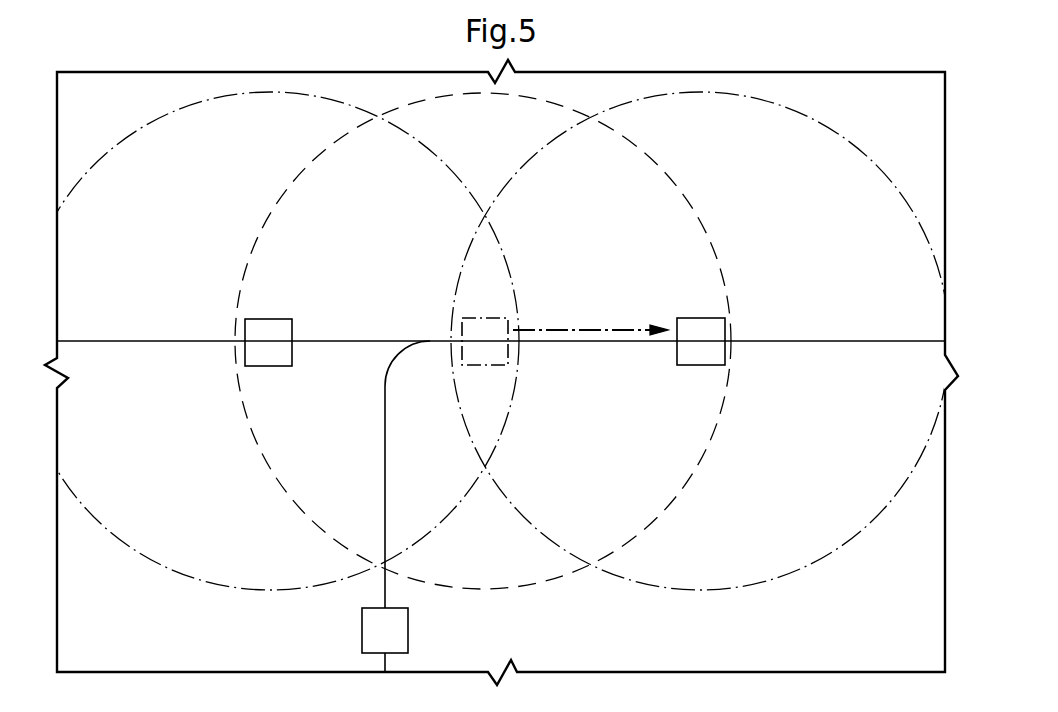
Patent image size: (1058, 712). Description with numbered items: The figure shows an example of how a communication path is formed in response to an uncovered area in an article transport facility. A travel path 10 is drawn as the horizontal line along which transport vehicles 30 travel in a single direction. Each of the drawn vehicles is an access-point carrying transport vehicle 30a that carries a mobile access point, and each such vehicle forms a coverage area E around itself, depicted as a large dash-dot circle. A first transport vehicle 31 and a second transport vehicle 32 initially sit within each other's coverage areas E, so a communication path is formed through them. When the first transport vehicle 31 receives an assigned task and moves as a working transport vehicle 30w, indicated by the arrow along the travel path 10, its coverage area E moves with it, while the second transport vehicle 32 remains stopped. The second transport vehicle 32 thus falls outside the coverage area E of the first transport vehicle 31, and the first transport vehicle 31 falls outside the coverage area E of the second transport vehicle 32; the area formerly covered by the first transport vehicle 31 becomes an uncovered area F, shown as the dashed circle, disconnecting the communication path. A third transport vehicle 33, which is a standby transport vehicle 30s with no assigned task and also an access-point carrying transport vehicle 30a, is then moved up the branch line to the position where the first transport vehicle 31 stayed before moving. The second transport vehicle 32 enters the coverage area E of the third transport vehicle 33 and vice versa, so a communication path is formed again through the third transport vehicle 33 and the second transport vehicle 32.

The travel path 10 is at (838, 342).
The transport vehicle 30 is at (276, 366).
The access-point carrying transport vehicle 30a is at (501, 506).
The working transport vehicle 30w is at (653, 308).
The first transport vehicle 31 is at (487, 318).
The second transport vehicle 32 is at (267, 319).
The standby transport vehicle 30s is at (322, 630).
The third transport vehicle 33 is at (362, 632).
The coverage area E is at (143, 560).
The uncovered area F is at (560, 586).